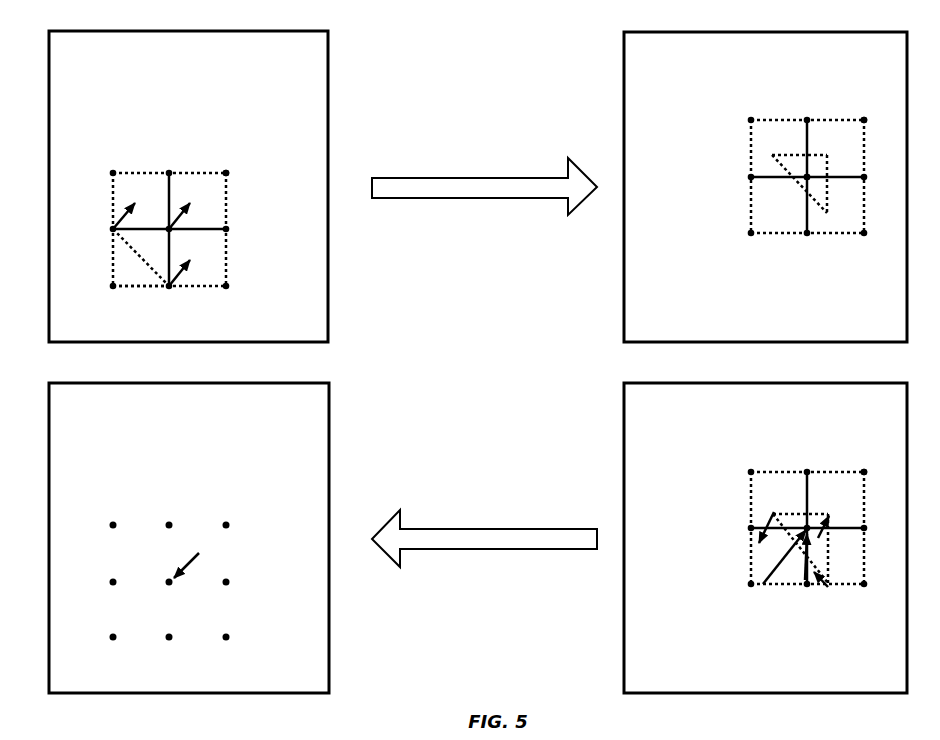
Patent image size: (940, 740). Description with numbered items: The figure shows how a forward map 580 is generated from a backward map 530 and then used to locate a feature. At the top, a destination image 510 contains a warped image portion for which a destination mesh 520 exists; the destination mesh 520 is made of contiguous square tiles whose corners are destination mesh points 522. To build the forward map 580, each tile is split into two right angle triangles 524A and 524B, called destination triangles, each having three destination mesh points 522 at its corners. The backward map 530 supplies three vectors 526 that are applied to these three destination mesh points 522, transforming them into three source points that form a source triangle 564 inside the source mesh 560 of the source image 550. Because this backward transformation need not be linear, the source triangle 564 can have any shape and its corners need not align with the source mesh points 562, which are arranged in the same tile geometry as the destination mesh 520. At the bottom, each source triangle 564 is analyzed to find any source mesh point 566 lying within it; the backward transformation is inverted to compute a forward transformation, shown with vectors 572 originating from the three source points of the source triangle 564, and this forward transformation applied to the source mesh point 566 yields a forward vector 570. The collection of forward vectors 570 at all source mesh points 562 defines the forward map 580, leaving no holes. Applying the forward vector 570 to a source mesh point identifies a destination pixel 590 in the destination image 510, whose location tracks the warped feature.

The destination image 510 is at (189, 362).
The destination mesh 520 is at (142, 183).
The destination mesh points 522 is at (226, 172).
The right angle triangle 524A is at (145, 240).
The right angle triangle 524B is at (127, 270).
The vectors 526 is at (122, 217).
The backward map 530 is at (484, 186).
The source image 550 is at (765, 362).
The source mesh 560 is at (780, 132).
The source mesh points 562 is at (864, 120).
The source triangle 564 is at (792, 162).
The source mesh point 566 is at (807, 179).
The forward vector 570 is at (765, 582).
The vectors 572 is at (825, 592).
The forward map 580 is at (484, 538).
The destination pixel 590 is at (172, 585).